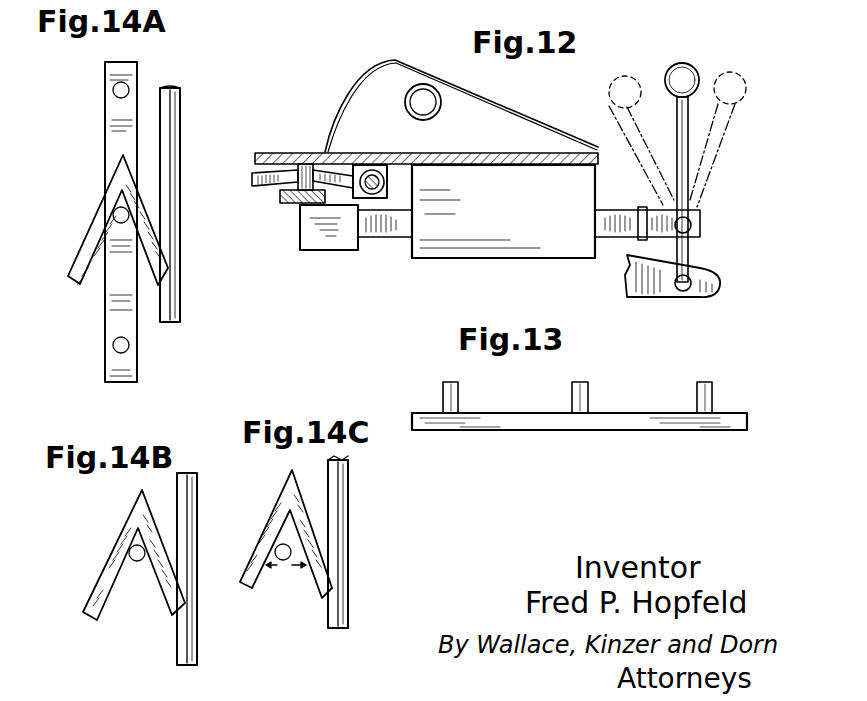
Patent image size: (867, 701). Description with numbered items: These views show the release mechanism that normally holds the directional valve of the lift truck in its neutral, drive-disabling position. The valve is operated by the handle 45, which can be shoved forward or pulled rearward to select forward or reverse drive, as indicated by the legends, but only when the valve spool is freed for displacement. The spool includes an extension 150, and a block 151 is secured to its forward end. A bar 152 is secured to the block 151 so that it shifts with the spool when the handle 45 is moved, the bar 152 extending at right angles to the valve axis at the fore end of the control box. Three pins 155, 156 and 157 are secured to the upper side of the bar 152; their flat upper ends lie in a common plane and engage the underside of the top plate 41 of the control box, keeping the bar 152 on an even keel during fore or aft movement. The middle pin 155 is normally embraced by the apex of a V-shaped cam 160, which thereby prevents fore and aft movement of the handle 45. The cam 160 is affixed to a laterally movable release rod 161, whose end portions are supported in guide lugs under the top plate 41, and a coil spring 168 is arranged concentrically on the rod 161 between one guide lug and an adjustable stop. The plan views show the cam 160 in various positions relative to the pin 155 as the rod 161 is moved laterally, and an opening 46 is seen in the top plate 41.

In FIG. 12, the top plate 41 is at (448, 153).
In FIG. 12, the handle 45 is at (688, 165).
In FIG. 12, the ring / eye 46 is at (420, 95).
In FIG. 12, the extension 150 is at (394, 243).
In FIG. 12, the block 151 is at (335, 232).
In FIG. 14A, the bar 152 is at (118, 128).
In FIG. 12, the bar 152 is at (289, 203).
In FIG. 13, the bar 152 is at (555, 424).
In FIG. 14A, the middle pin 155 is at (120, 214).
In FIG. 12, the middle pin 155 is at (308, 164).
In FIG. 13, the middle pin 155 is at (582, 395).
In FIG. 14B, the middle pin 155 is at (135, 562).
In FIG. 14C, the middle pin 155 is at (283, 560).
In FIG. 14A, the pin 156 is at (123, 88).
In FIG. 13, the pin 156 is at (455, 400).
In FIG. 14A, the pin 157 is at (123, 343).
In FIG. 13, the pin 157 is at (710, 400).
In FIG. 14A, the V-shaped cam 160 is at (148, 233).
In FIG. 12, the V-shaped cam 160 is at (254, 178).
In FIG. 14B, the V-shaped cam 160 is at (134, 555).
In FIG. 14C, the V-shaped cam 160 is at (276, 520).
In FIG. 14A, the release rod 161 is at (176, 137).
In FIG. 12, the release rod 161 is at (368, 175).
In FIG. 14B, the release rod 161 is at (193, 538).
In FIG. 14C, the release rod 161 is at (343, 520).
In FIG. 12, the coil spring 168 is at (392, 194).